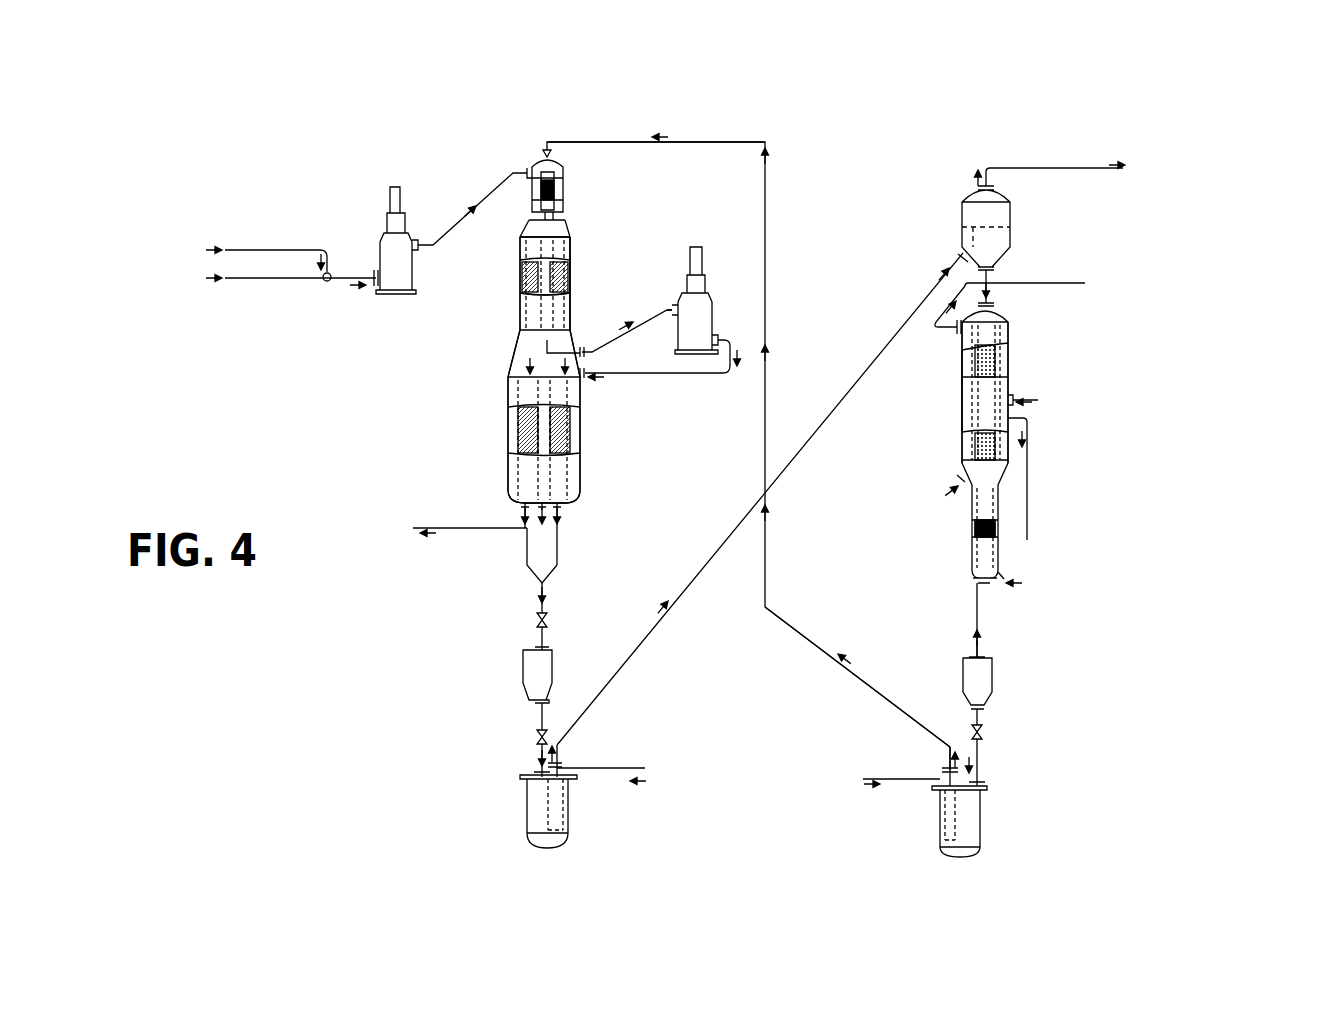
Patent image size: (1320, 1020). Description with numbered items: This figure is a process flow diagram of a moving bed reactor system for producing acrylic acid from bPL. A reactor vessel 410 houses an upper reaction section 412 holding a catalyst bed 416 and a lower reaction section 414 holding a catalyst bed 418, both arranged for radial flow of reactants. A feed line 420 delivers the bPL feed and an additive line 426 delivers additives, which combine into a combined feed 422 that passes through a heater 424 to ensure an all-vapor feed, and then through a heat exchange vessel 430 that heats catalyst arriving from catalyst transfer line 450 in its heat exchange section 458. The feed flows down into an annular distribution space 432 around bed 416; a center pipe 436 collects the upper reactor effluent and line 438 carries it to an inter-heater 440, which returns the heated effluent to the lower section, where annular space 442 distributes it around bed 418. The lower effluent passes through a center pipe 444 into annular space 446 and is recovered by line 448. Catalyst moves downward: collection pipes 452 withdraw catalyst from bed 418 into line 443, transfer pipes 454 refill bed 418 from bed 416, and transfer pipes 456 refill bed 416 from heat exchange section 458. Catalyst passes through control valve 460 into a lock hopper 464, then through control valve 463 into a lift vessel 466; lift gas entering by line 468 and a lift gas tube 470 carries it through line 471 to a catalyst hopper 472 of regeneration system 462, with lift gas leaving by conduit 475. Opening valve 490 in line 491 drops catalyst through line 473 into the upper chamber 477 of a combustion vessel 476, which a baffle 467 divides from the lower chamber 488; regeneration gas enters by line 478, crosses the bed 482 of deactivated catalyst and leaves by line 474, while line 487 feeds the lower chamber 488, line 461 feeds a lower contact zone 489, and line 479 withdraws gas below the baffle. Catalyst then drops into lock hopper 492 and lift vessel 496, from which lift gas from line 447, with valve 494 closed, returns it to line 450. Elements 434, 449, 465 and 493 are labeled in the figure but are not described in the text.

The reactor vessel 410 is at (385, 396).
The upper reaction section 412 is at (600, 252).
The lower reaction section 414 is at (480, 442).
The bed of catalyst 416 is at (519, 250).
The bed of catalyst 418 is at (560, 430).
The feed line 420 is at (265, 280).
The combined feed 422 is at (340, 280).
The heater 424 is at (385, 222).
The additive line 426 is at (300, 250).
The heat exchange vessel 430 is at (566, 182).
The annular distribution space 432 is at (568, 252).
The catalyst bed 434 is at (547, 280).
The center pipe 436 is at (524, 290).
The line 438 is at (652, 318).
The inter-heater 440 is at (705, 287).
The annular space 442 is at (575, 470).
The line 443 is at (537, 600).
The center pipe 444 is at (512, 462).
The annular space 446 is at (580, 493).
The line 447 is at (905, 778).
The line 448 is at (460, 530).
The transfer line 449 is at (872, 688).
The catalyst transfer line 450 is at (562, 142).
The collection pipes 452 is at (557, 560).
The transfer pipes 454 is at (525, 362).
The transfer pipes 456 is at (522, 220).
The heat exchange section 458 is at (566, 170).
The upper control valve 460 is at (545, 623).
The line 461 is at (1005, 582).
The regeneration system 462 is at (1165, 412).
The control valve 463 is at (533, 733).
The lock hopper 464 is at (522, 667).
The transfer line 465 is at (533, 713).
The lift vessel 466 is at (525, 813).
The baffle 467 is at (962, 420).
The line 468 is at (598, 767).
The lift gas tube 470 is at (570, 812).
The line 471 is at (598, 697).
The catalyst hopper 472 is at (1013, 213).
The line 473 is at (993, 283).
The line 474 is at (1085, 283).
The conduit 475 is at (1050, 168).
The combustion vessel 476 is at (1013, 330).
The upper chamber 477 is at (1000, 362).
The line 478 is at (1023, 395).
The line 479 is at (1027, 478).
The bed of deactivated catalyst 482 is at (962, 365).
The line 487 is at (940, 500).
The lower chamber 488 is at (963, 447).
The lower contact zone 489 is at (970, 560).
The valve 490 is at (977, 628).
The line 491 is at (977, 647).
The lock hopper 492 is at (993, 685).
The line 493 is at (980, 727).
The valve 494 is at (982, 737).
The lift vessel 496 is at (982, 822).